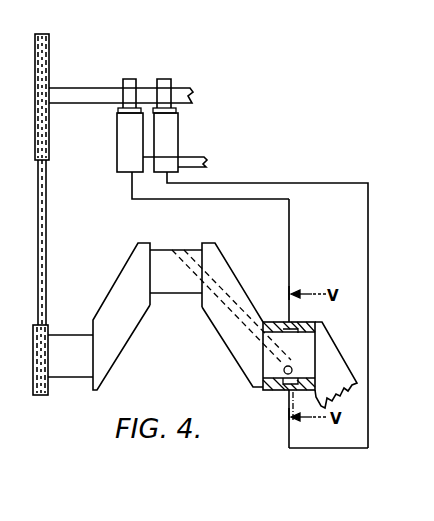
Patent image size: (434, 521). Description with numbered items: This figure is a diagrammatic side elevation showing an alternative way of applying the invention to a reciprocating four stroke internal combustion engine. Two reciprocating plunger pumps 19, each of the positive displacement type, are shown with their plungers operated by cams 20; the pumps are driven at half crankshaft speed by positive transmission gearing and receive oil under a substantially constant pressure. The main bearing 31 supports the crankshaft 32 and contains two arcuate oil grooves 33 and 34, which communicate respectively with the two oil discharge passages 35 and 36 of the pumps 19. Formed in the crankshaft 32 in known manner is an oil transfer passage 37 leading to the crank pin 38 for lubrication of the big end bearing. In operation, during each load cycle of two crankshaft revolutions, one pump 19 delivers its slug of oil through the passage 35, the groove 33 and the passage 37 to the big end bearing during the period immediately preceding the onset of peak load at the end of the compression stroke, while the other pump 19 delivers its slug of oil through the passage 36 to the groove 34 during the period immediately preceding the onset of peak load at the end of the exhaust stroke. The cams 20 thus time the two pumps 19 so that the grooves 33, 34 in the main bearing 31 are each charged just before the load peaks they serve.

The plunger pump 19 is at (125, 134).
The cam 20 is at (158, 79).
The main bearing 31 is at (272, 389).
The crankshaft 32 is at (221, 272).
The arcuate oil groove 33 is at (284, 391).
The arcuate oil groove 34 is at (300, 338).
The oil discharge passage 35 is at (318, 450).
The oil discharge passage 36 is at (290, 246).
The oil transfer passage 37 is at (216, 312).
The crank pin 38 is at (161, 262).